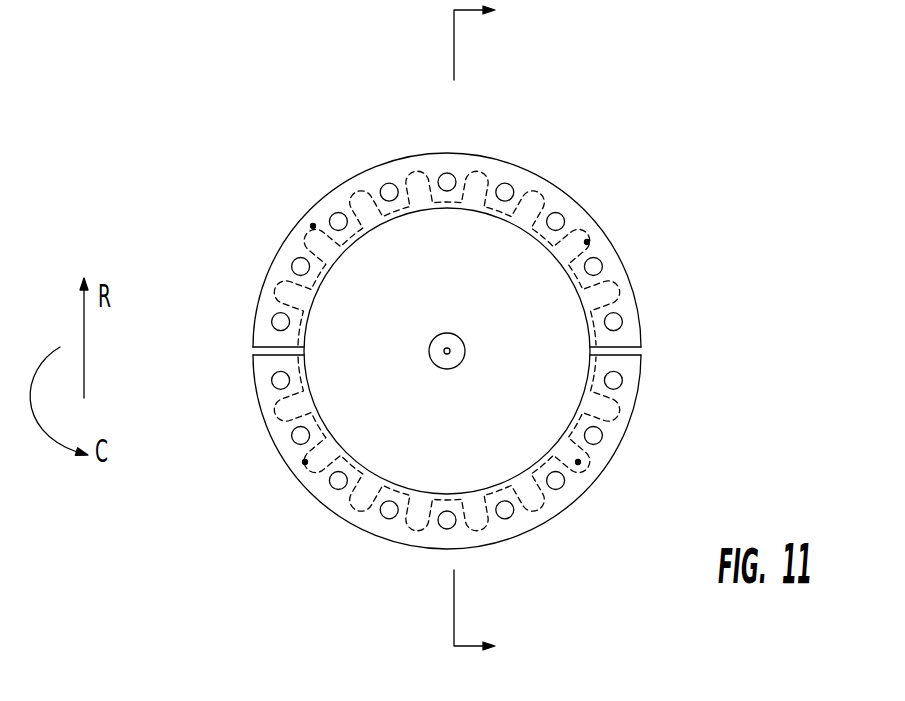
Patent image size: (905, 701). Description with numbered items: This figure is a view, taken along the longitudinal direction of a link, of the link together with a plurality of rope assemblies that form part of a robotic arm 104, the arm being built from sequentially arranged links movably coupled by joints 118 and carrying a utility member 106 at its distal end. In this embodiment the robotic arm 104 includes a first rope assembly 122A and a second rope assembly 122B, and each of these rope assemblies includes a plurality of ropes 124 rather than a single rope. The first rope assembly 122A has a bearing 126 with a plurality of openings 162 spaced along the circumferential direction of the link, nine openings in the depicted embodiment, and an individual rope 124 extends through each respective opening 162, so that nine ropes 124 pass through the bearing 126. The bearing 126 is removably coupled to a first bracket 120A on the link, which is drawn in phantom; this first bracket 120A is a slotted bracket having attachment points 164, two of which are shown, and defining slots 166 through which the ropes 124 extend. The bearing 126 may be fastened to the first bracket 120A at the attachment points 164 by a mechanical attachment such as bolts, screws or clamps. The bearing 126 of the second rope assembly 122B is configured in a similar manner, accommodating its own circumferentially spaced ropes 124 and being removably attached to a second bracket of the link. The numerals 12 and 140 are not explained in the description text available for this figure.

The section line for FIG. 12 is at (478, 344).
The robotic arm 104 is at (721, 188).
The utility member 106 is at (483, 257).
The joints 118 is at (443, 355).
The first bracket 120A is at (557, 187).
The first rope assembly 122A is at (444, 100).
The second rope assembly 122B is at (556, 578).
The ropes 124 is at (390, 183).
The bearing 126 is at (528, 188).
The center axis 140 is at (449, 352).
The openings 162 is at (376, 182).
The attachment points 164 is at (312, 226).
The slots 166 is at (590, 218).